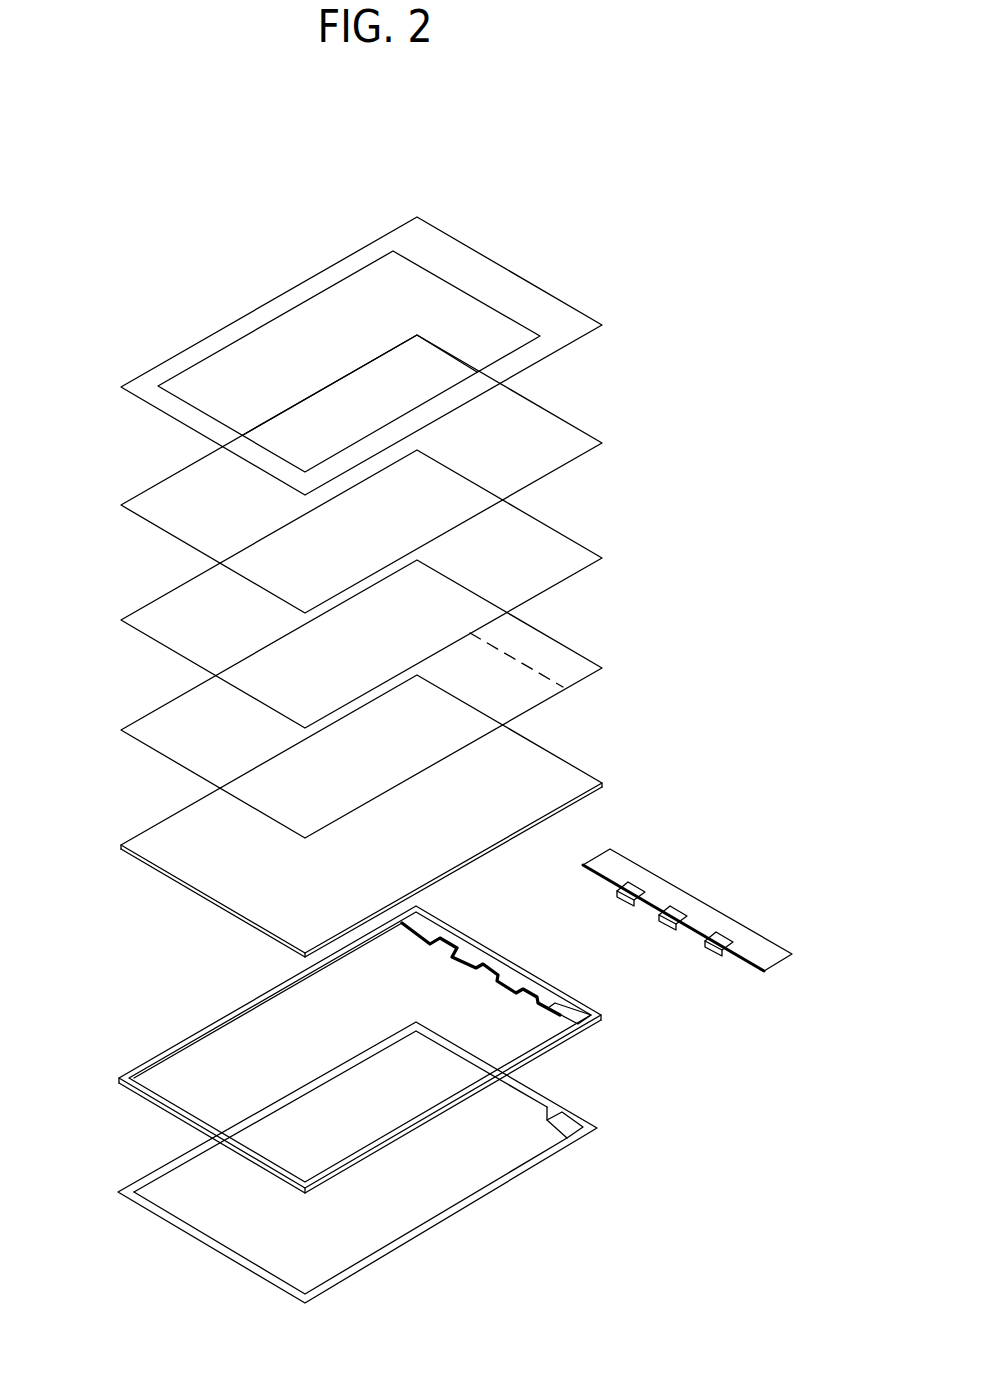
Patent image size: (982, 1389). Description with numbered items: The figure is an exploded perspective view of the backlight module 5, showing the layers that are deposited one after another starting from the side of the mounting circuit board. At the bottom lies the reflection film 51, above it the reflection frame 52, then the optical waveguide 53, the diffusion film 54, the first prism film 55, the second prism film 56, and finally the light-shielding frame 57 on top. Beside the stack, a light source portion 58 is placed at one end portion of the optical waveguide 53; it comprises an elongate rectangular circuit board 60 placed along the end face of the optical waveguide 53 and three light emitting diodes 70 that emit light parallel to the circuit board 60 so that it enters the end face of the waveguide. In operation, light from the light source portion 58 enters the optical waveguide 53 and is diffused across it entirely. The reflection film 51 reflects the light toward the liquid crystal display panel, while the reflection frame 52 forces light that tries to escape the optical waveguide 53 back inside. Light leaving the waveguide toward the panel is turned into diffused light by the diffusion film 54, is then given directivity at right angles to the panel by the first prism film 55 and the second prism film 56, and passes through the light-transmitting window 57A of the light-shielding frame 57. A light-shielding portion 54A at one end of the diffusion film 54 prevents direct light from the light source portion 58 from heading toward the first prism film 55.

The backlight module 5 is at (588, 244).
The reflection film 51 is at (133, 1200).
The reflection frame 52 is at (122, 1077).
The optical waveguide 53 is at (188, 830).
The diffusion film 54 is at (188, 712).
The light-shielding portion 54A is at (530, 652).
The first prism film 55 is at (188, 595).
The second prism film 56 is at (188, 482).
The light-shielding frame 57 is at (188, 350).
The light-transmitting window 57A is at (313, 320).
The light source portion 58 is at (678, 875).
The circuit board 60 is at (767, 957).
The light emitting diodes 70 is at (622, 896).